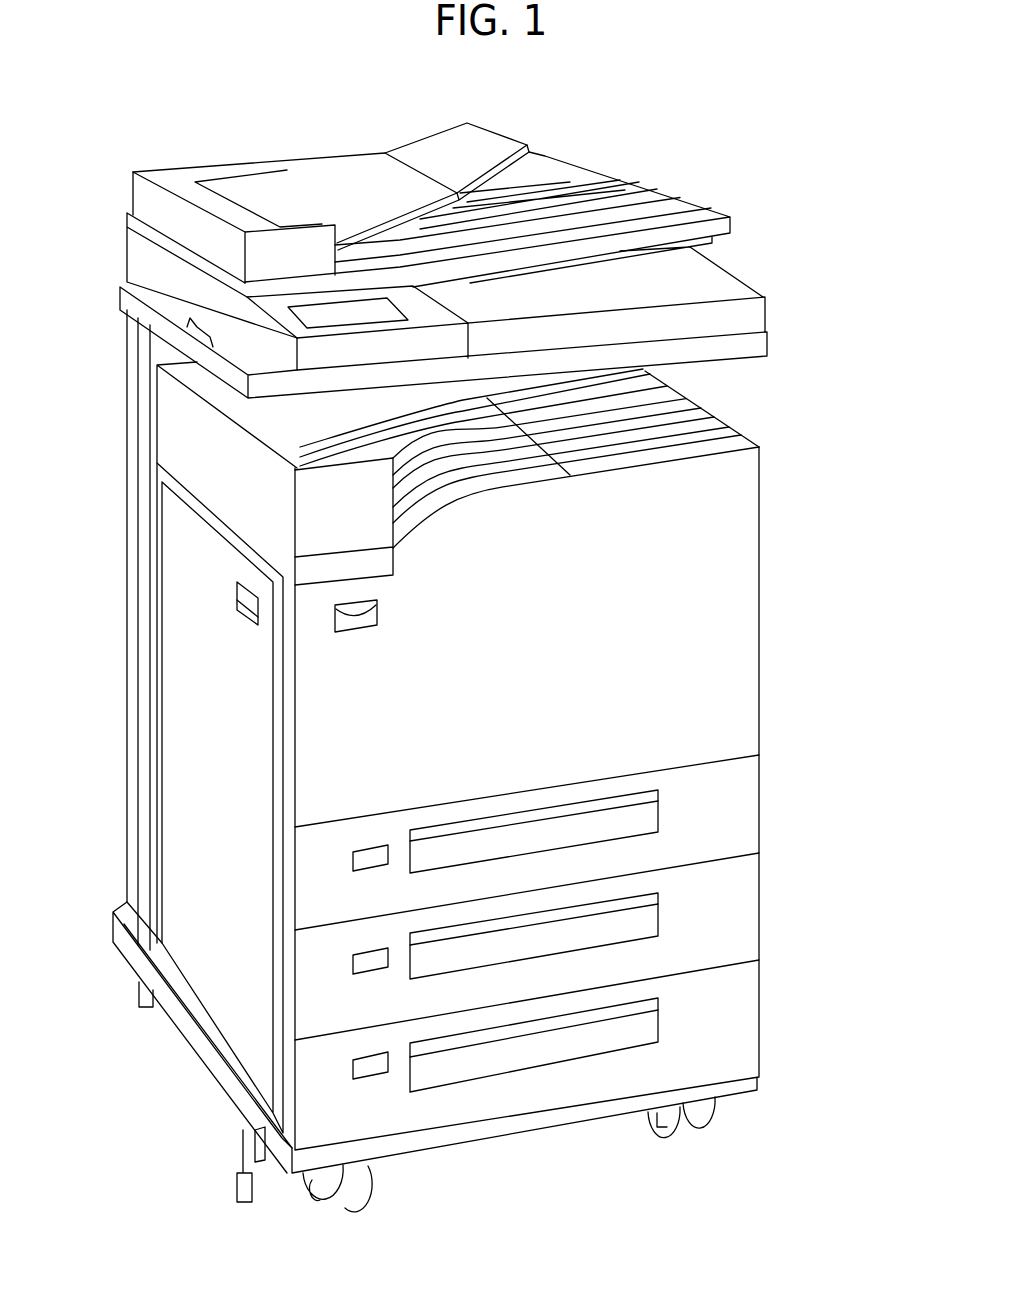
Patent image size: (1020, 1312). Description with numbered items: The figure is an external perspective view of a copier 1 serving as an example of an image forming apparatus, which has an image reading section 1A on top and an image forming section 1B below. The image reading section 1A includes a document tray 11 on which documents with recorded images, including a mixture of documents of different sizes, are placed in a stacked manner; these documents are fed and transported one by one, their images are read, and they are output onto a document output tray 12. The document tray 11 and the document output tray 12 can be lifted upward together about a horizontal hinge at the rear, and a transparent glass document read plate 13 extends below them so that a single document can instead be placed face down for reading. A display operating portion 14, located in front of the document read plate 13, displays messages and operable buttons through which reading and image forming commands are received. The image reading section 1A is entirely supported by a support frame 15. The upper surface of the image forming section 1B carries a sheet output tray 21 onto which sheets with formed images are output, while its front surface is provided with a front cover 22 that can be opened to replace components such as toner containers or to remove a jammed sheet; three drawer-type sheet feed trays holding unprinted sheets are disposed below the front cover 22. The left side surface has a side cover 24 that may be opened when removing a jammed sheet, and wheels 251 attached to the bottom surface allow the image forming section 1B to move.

The copier 1 is at (850, 200).
The image reading section 1A is at (717, 187).
The image forming section 1B is at (802, 535).
The document tray 11 is at (350, 176).
The document output tray 12 is at (587, 197).
The document read plate 13 is at (627, 230).
The display operating portion 14 is at (327, 308).
The support frame 15 is at (127, 461).
The sheet output tray 21 is at (509, 441).
The front cover 22 is at (745, 606).
The side cover 24 is at (180, 677).
The wheels 251 is at (708, 1110).